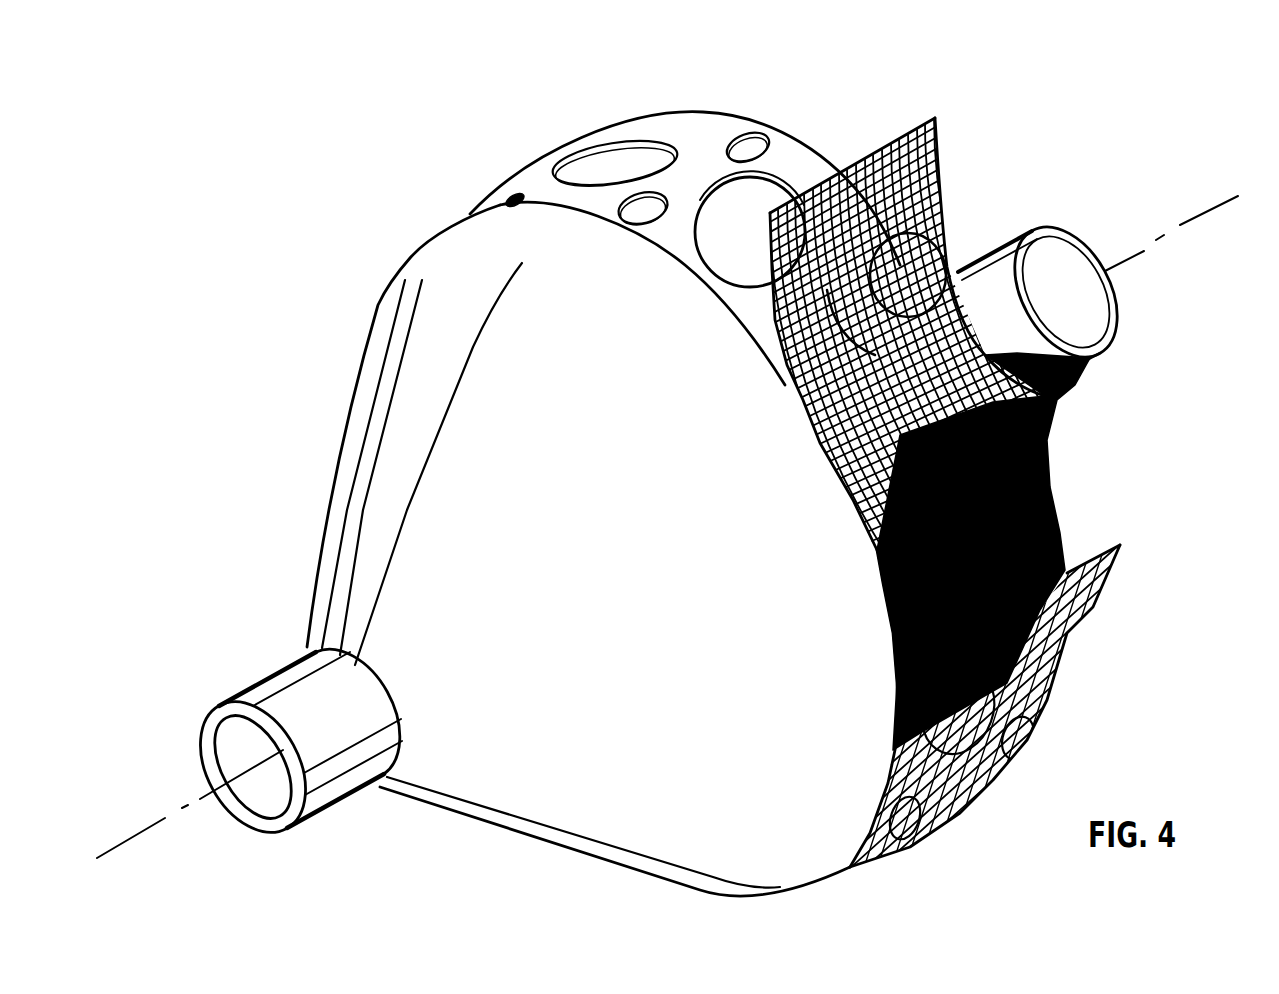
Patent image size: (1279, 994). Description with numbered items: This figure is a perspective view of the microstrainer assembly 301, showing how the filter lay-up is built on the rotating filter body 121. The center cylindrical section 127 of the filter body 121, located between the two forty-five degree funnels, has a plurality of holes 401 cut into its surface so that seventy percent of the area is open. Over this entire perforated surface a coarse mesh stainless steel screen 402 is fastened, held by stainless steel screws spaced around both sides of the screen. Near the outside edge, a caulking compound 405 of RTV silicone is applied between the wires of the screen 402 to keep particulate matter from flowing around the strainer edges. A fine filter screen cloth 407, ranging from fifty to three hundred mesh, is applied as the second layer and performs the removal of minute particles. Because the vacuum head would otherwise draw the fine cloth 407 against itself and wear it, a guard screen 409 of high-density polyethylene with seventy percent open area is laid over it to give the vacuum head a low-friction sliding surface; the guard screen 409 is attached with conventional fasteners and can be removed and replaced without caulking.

The filter body 121 is at (345, 457).
The center cylindrical section 127 is at (777, 130).
The microstrainer assembly 301 is at (700, 457).
The holes 401 is at (720, 187).
The coarse mesh stainless steel screen 402 is at (940, 183).
The caulking compound 405 is at (837, 470).
The fine filter screen cloth 407 is at (1058, 416).
The guard screen 409 is at (1080, 580).